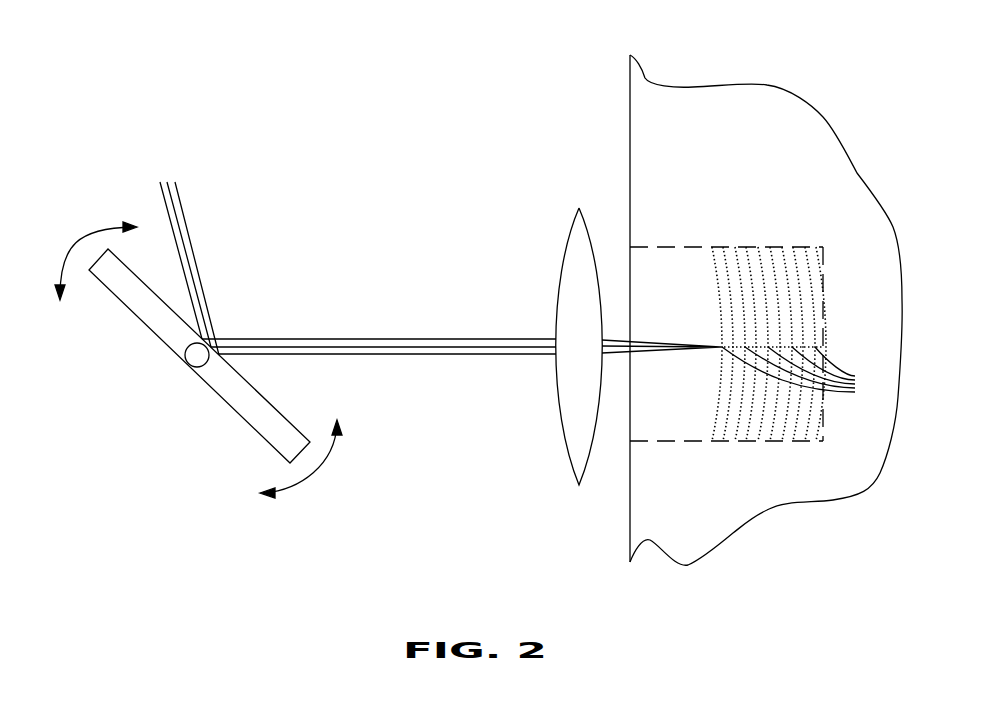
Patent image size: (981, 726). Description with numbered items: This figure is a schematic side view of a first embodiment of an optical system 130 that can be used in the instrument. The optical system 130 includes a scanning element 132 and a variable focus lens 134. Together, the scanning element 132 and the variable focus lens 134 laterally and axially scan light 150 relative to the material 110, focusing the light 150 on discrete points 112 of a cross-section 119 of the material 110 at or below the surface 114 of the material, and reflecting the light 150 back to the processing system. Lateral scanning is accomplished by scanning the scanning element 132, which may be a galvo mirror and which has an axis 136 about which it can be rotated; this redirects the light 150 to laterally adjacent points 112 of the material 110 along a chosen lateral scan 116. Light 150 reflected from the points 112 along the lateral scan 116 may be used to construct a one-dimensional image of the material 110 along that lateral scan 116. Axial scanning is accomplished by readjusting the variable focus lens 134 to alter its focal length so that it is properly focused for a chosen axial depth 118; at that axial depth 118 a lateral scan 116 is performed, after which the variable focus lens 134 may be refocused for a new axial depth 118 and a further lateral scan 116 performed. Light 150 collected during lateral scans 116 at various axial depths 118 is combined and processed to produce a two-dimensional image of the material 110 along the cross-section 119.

The optical system 130 is at (116, 101).
The light 150 is at (178, 193).
The scanning element 132 is at (247, 427).
The axis 136 is at (197, 355).
The variable focus lens 134 is at (533, 248).
The surface 114 is at (628, 145).
The material 110 is at (735, 146).
The discrete points 112 is at (719, 343).
The cross-section 119 is at (823, 308).
The lateral scan 116 is at (807, 246).
The axial depth 118 is at (807, 370).